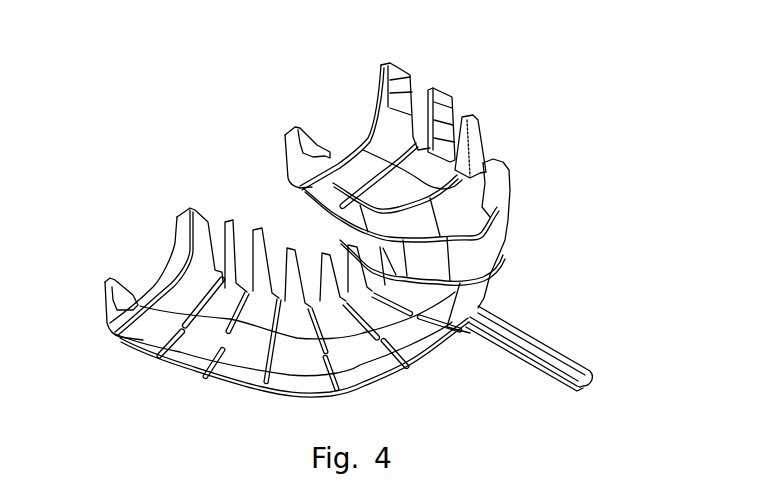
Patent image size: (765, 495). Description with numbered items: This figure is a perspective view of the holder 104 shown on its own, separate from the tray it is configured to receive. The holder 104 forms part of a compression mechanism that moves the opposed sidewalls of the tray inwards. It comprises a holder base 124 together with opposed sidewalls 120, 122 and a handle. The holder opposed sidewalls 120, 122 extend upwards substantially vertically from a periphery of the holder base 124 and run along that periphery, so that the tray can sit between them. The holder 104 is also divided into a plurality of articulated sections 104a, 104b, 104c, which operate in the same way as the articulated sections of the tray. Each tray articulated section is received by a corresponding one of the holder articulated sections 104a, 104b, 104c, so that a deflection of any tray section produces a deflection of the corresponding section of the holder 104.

The holder 104 is at (560, 274).
The articulated section 104a is at (380, 88).
The articulated section 104b is at (433, 97).
The articulated section 104c is at (482, 132).
The holder opposed sidewall 120 is at (518, 149).
The holder opposed sidewall 122 is at (162, 220).
The holder base 124 is at (172, 380).